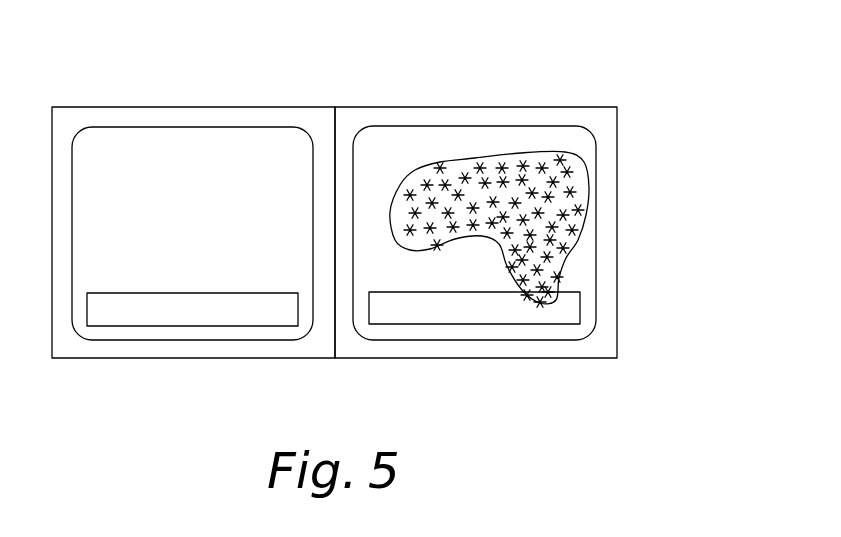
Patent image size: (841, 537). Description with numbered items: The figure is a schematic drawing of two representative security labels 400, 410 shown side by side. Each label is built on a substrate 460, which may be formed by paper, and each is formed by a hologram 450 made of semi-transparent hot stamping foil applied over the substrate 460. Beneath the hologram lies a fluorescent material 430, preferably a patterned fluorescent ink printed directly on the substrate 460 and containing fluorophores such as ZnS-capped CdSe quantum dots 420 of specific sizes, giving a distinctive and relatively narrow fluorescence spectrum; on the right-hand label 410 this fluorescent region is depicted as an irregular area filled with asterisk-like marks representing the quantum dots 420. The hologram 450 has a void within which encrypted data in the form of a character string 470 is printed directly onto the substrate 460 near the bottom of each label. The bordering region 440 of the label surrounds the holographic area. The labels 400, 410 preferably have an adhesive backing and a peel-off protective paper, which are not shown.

The label 400 is at (162, 107).
The label 410 is at (385, 107).
The quantum dots 420 is at (567, 172).
The fluorescent material 430 is at (583, 195).
The carrier frame 440 is at (607, 230).
The hologram 450 is at (578, 262).
The substrate 460 is at (580, 307).
The character string 470 is at (493, 318).